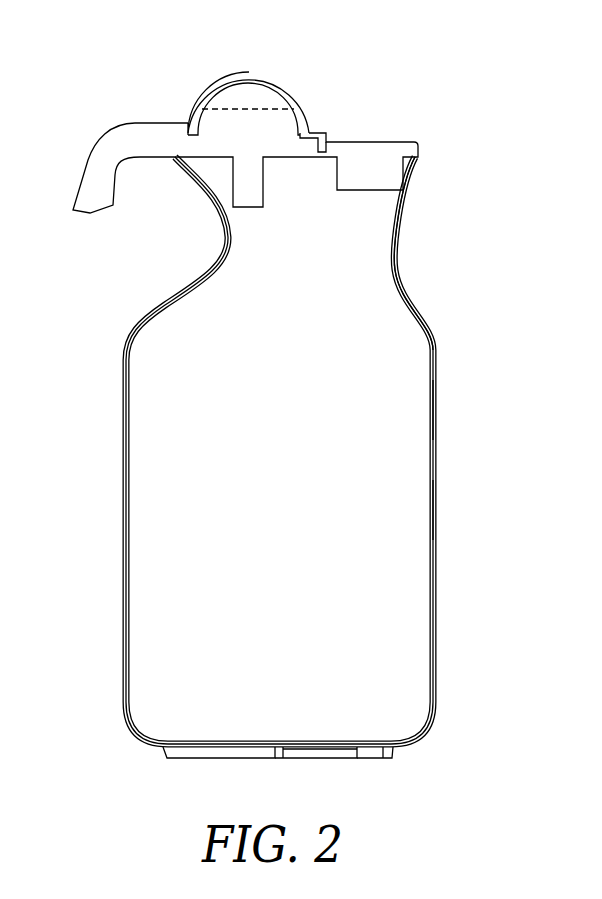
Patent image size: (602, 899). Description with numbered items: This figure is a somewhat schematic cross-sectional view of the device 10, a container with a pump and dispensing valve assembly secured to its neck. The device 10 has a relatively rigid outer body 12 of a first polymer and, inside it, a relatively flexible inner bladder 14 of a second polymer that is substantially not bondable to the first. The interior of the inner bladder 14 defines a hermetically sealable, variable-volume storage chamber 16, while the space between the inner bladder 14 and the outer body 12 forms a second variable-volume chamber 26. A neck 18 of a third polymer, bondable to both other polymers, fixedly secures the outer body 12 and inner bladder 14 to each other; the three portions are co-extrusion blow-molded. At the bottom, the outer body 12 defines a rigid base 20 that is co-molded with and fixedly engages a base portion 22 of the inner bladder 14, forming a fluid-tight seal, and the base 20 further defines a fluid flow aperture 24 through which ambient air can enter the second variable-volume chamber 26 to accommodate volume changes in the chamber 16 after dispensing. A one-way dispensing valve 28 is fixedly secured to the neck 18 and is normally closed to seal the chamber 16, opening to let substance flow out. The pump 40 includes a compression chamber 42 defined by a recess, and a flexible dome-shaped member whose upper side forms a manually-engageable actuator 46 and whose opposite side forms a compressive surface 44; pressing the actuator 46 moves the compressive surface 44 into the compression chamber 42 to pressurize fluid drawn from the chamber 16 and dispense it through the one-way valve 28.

The device 10 is at (502, 126).
The outer body 12 is at (436, 350).
The flexible inner bladder 14 is at (429, 409).
The chamber 16 is at (290, 528).
The neck 18 is at (395, 240).
The base 20 is at (218, 752).
The base portion 22 is at (282, 750).
The fluid flow aperture 24 is at (368, 750).
The second variable-volume chamber 26 is at (436, 505).
The one-way dispensing valve 28 is at (90, 115).
The pump 40 is at (322, 97).
The compression chamber 42 is at (217, 102).
The compressive surface 44 is at (248, 82).
The manually-engageable actuator 46 is at (218, 80).